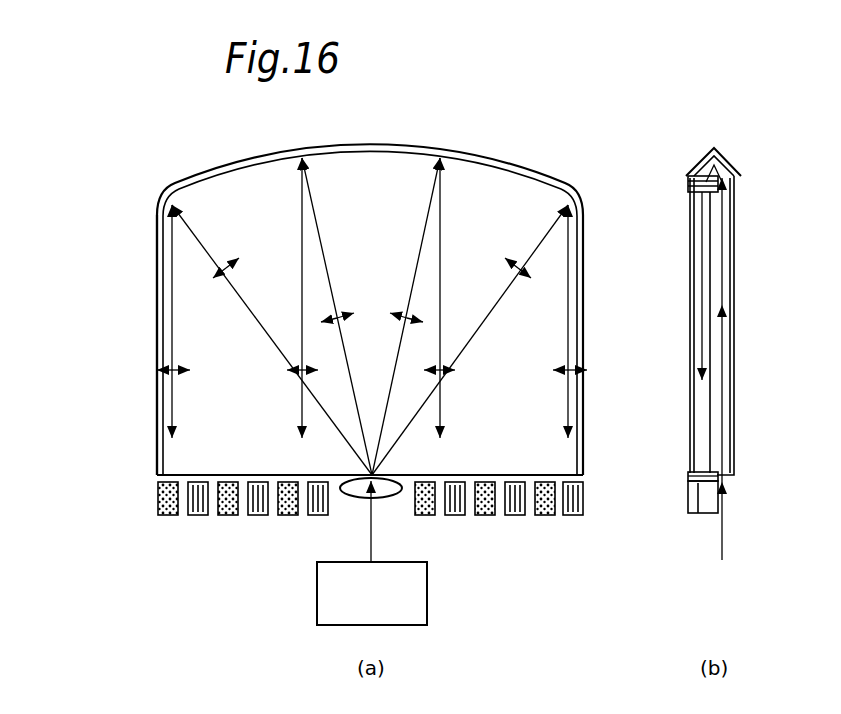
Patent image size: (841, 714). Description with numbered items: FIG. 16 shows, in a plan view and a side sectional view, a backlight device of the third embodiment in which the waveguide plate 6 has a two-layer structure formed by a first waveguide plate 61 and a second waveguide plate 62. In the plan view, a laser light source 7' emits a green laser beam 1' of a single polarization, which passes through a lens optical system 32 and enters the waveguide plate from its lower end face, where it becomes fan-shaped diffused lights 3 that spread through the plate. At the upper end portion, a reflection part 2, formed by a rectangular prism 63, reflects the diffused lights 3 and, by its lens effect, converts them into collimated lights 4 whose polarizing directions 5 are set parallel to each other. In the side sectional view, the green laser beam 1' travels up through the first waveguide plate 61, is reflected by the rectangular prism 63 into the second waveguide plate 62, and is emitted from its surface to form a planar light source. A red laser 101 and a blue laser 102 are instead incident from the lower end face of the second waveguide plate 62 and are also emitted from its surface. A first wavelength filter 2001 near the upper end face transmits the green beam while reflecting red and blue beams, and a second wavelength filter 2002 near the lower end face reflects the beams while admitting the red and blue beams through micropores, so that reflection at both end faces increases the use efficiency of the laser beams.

The reflection part 2 is at (428, 145).
The rectangular prism 63 is at (482, 153).
The diffused lights 3 is at (190, 230).
The collimated lights 4 is at (168, 268).
The polarizing directions 5 is at (157, 365).
The waveguide plate 6 is at (578, 466).
The lens optical system 32 is at (393, 497).
The green laser beam 1' is at (548, 370).
The laser light source 7' is at (403, 593).
The red laser 101 is at (157, 494).
The blue laser 102 is at (196, 515).
The first waveguide plate 61 is at (733, 246).
The second waveguide plate 62 is at (693, 305).
The first wavelength filter 2001 is at (688, 188).
The second wavelength filter 2002 is at (700, 473).